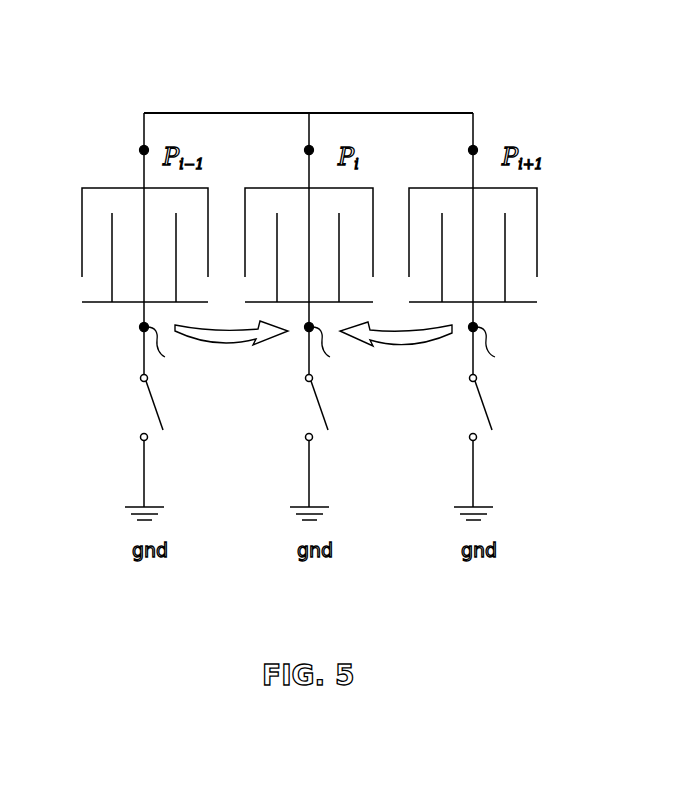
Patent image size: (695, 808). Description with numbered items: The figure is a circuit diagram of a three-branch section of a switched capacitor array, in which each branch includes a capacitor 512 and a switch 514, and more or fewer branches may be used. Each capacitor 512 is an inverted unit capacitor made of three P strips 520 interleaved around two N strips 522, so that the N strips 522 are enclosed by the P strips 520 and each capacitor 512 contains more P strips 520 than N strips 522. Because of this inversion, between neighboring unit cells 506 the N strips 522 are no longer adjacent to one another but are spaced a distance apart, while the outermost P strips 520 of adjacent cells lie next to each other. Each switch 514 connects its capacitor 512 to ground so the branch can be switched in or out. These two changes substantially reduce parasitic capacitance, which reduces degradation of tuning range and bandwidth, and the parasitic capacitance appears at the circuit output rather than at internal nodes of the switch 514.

The unit cell 506 is at (93, 185).
The capacitor 512 is at (197, 175).
The P strips 520 is at (247, 227).
The N strips 522 is at (440, 275).
The switch 514 is at (128, 443).